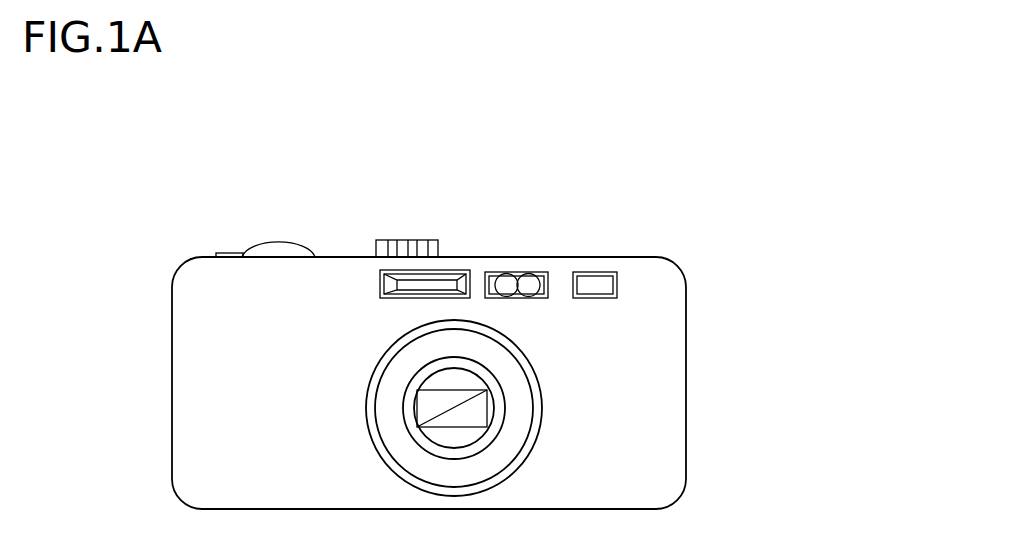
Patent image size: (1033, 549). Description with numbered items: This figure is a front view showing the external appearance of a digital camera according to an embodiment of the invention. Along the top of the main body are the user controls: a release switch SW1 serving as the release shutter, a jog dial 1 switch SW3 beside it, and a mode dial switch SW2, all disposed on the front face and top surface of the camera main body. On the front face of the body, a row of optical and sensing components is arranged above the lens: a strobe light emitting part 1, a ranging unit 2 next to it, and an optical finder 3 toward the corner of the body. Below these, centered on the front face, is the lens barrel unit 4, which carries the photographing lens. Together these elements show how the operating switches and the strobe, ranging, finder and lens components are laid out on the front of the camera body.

The release switch SW1 is at (232, 254).
The jog dial 1 switch SW3 is at (283, 242).
The mode dial switch SW2 is at (412, 240).
The strobe light emitting part 1 is at (450, 275).
The ranging unit 2 is at (515, 273).
The optical finder 3 is at (617, 285).
The lens barrel unit 4 is at (475, 468).